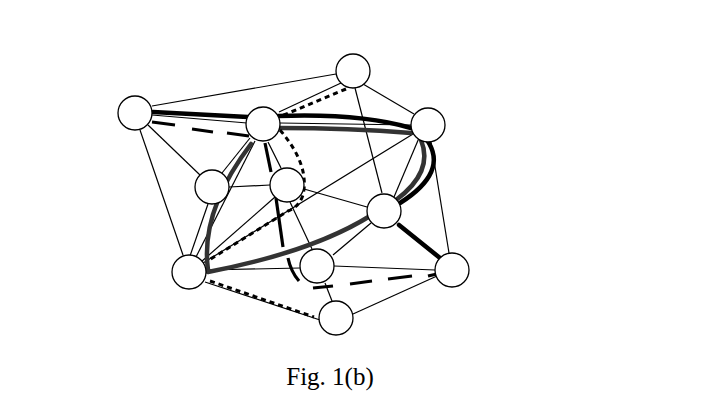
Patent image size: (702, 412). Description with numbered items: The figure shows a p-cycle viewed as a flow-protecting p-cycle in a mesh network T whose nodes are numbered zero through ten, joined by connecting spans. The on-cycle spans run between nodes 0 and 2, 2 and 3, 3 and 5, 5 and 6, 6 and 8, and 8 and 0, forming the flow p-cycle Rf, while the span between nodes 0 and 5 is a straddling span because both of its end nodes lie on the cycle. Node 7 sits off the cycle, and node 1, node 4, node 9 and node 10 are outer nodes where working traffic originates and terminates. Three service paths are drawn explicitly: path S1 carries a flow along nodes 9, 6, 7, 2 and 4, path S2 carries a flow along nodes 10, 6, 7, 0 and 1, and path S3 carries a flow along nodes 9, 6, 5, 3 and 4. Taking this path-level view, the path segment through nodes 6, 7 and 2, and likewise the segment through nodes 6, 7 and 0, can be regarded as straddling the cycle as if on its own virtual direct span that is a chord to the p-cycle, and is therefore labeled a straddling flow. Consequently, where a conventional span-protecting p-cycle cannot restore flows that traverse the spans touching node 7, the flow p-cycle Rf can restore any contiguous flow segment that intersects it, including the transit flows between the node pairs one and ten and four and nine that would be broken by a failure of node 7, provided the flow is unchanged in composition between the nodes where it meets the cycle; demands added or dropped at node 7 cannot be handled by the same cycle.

The service path S1 is at (190, 129).
The service path S2 is at (313, 93).
The service path S3 is at (220, 111).
The network T is at (402, 87).
The flow p-cycle Rf is at (412, 173).
The node 0 is at (189, 272).
The node 1 is at (336, 318).
The node 2 is at (317, 266).
The node 3 is at (384, 211).
The node 4 is at (452, 270).
The node 5 is at (428, 125).
The node 6 is at (263, 124).
The node 7 is at (287, 185).
The node 8 is at (212, 187).
The node 9 is at (135, 113).
The node 10 is at (353, 71).